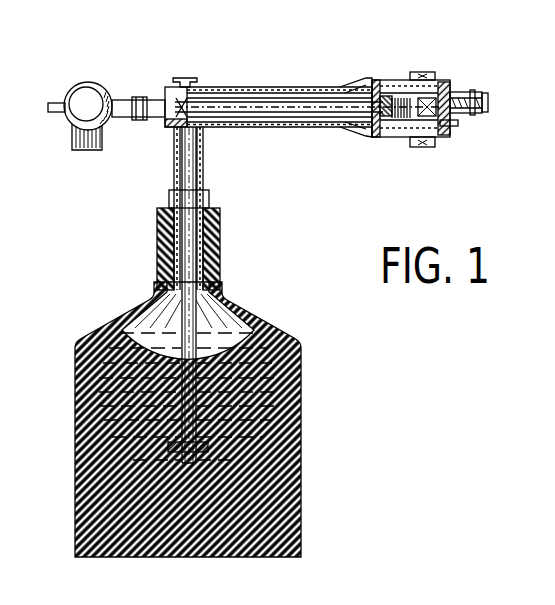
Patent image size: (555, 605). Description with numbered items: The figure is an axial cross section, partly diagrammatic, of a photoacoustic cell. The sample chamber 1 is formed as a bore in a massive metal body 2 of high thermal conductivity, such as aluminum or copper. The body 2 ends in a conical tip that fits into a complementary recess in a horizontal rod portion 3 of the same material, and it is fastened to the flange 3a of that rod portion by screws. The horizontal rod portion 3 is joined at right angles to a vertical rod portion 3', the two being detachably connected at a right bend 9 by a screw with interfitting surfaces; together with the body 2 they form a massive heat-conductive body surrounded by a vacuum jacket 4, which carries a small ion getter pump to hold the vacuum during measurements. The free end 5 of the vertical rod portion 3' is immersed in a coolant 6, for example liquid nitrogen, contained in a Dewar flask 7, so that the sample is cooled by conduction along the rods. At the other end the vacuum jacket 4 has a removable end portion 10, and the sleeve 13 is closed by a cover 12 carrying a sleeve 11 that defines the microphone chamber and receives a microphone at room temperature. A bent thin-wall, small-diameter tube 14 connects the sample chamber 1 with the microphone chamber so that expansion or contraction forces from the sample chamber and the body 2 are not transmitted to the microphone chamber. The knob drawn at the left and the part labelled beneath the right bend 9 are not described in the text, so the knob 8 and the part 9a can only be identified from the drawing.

The sample chamber 1 is at (410, 112).
The massive metal body 2 is at (378, 82).
The rod portion 3 is at (307, 64).
The flange 3a is at (383, 98).
The vertical rod portion 3' is at (248, 295).
The vacuum jacket 4 is at (232, 87).
The free end 5 is at (198, 462).
The coolant 6 is at (255, 400).
The Dewar flask 7 is at (300, 444).
The knob 8 is at (73, 87).
The right bend 9 is at (186, 83).
The bushing 9a is at (168, 121).
The end portion 10 is at (448, 79).
The sleeve 11 is at (466, 93).
The cover 12 is at (446, 126).
The sleeve 13 is at (410, 80).
The thin-wall small-diameter tube 14 is at (446, 85).